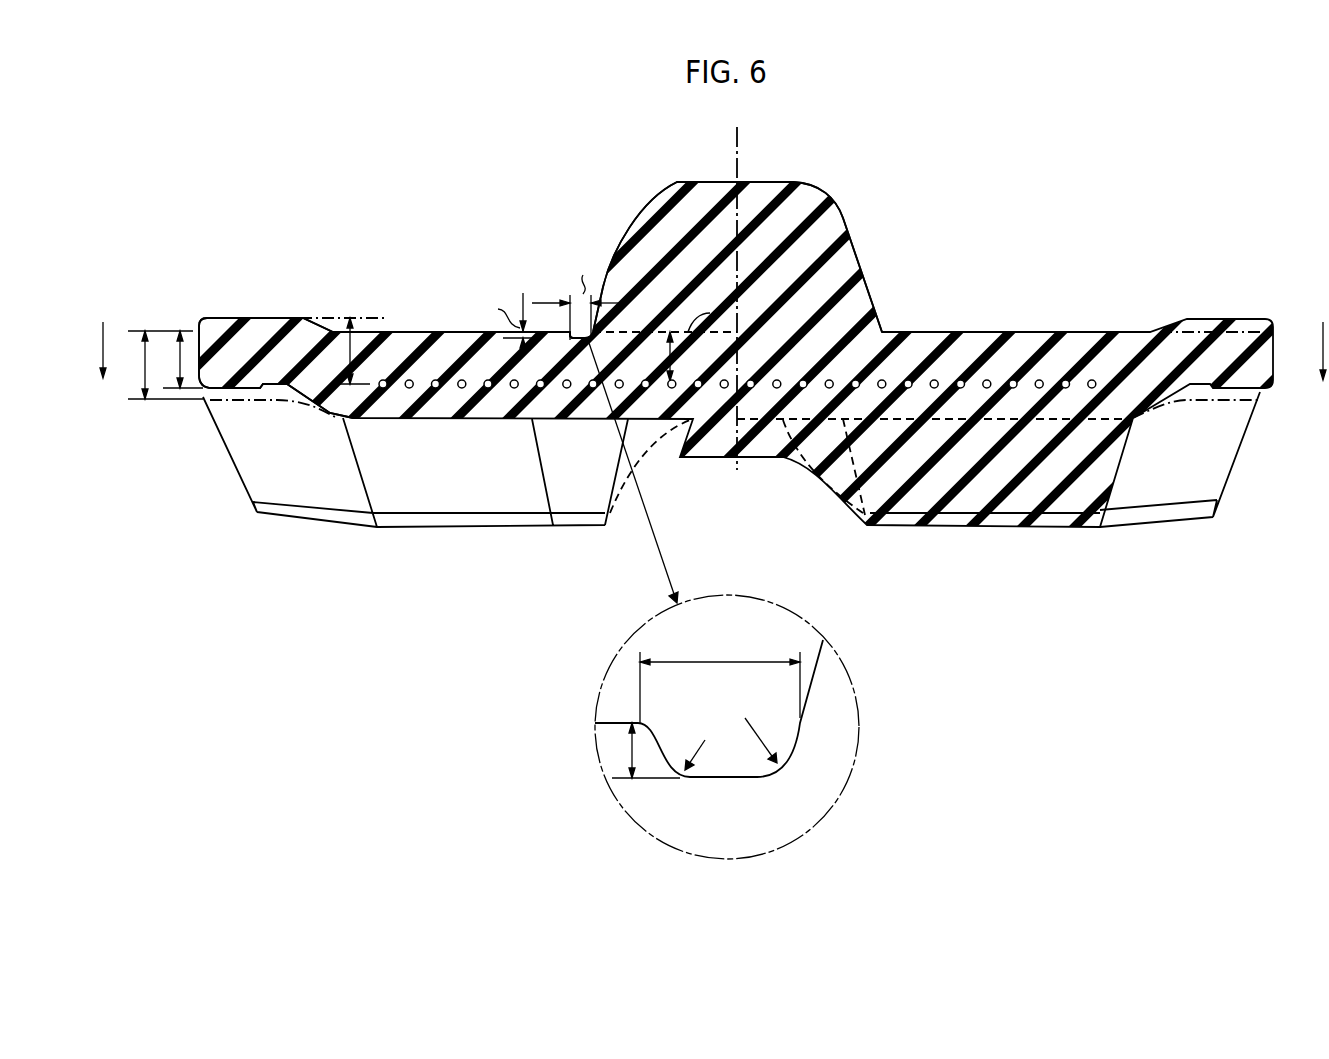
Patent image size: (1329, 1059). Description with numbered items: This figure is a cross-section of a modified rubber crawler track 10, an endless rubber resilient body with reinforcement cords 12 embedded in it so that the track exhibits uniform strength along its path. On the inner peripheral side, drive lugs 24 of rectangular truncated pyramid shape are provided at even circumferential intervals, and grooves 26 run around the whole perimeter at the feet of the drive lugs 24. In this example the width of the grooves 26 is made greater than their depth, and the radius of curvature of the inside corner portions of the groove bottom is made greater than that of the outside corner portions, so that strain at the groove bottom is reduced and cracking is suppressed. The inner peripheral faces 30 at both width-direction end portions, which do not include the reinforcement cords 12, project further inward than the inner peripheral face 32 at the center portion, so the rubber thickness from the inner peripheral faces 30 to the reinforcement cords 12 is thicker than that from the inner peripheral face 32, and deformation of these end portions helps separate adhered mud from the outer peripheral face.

The crawler track 10 is at (1090, 342).
The reinforcement cords 12 is at (963, 370).
The drive lugs 24 is at (838, 223).
The grooves 26 is at (584, 342).
The inner peripheral faces 30 is at (249, 316).
The inner peripheral face 32 is at (710, 313).